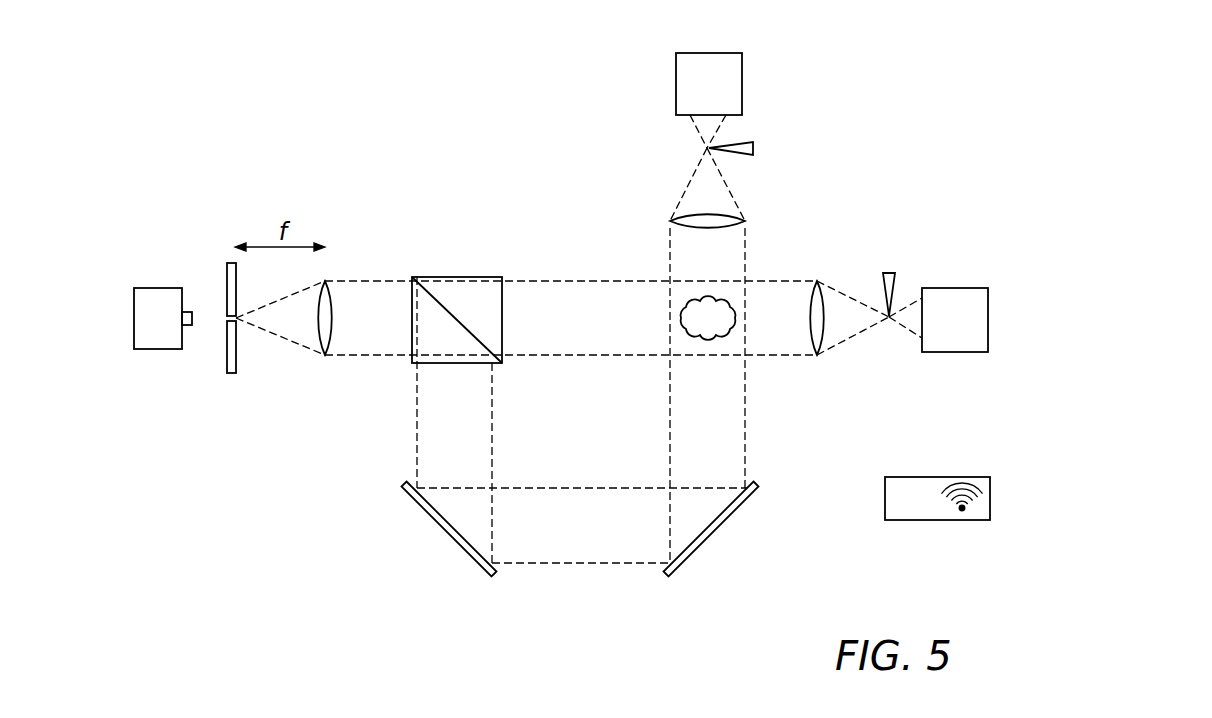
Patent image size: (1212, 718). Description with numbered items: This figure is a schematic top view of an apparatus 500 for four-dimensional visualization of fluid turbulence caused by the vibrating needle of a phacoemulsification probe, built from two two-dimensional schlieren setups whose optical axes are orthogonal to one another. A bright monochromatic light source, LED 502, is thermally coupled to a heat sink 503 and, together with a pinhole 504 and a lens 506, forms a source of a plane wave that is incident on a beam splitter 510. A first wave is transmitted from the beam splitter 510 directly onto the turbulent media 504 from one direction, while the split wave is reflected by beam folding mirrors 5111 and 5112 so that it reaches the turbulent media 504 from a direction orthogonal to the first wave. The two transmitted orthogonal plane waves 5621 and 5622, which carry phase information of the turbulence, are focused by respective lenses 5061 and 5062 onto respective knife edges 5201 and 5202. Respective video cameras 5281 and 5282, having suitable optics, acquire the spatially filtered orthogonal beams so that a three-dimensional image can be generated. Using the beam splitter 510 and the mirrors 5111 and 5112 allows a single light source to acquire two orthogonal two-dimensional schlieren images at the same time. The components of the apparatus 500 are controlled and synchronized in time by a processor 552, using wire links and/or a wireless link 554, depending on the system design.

The apparatus 500 is at (909, 175).
The LED 502 is at (189, 312).
The heat sink 503 is at (160, 350).
The pinhole 504 is at (233, 374).
The lens 506 is at (333, 316).
The beam splitter 510 is at (462, 276).
The lens 5061 is at (818, 358).
The lens 5062 is at (669, 222).
The mirror 5111 is at (442, 536).
The mirror 5112 is at (718, 536).
The knife edge 5201 is at (888, 272).
The knife edge 5202 is at (755, 150).
The video camera 5281 is at (957, 288).
The video camera 5282 is at (743, 78).
The transmitted orthogonal plane wave 5621 is at (753, 330).
The transmitted orthogonal plane wave 5622 is at (683, 265).
The processor 552 is at (892, 512).
The wireless link 554 is at (962, 512).